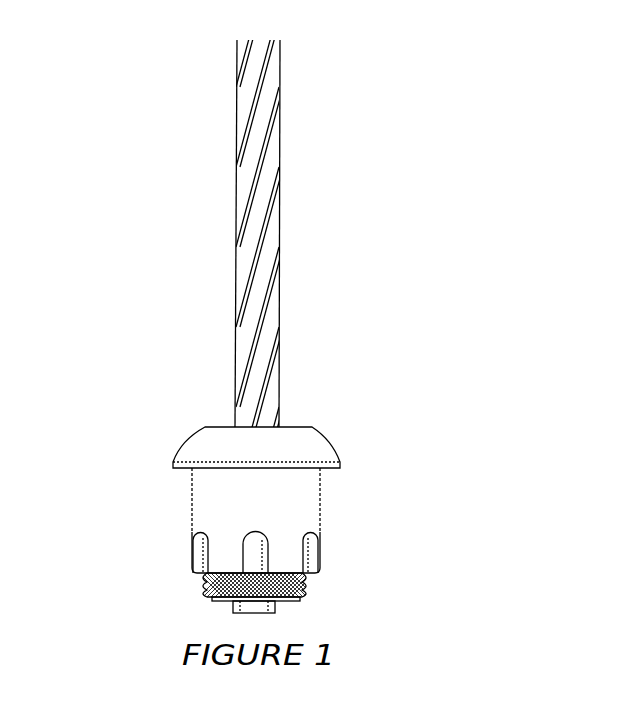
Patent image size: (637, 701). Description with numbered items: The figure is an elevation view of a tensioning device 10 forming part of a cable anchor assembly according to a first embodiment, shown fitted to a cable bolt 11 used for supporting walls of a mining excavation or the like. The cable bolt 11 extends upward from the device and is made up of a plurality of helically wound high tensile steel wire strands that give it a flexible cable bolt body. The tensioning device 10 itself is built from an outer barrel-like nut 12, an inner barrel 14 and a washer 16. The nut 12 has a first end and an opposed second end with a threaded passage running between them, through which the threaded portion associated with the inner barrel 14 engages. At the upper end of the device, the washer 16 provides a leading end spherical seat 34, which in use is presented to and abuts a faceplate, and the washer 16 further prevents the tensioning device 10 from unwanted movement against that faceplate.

The tensioning device 10 is at (295, 488).
The cable bolt 11 is at (283, 227).
The outer barrel-like nut 12 is at (218, 513).
The inner barrel 14 is at (310, 587).
The washer 16 is at (298, 448).
The leading end spherical seat 34 is at (202, 445).